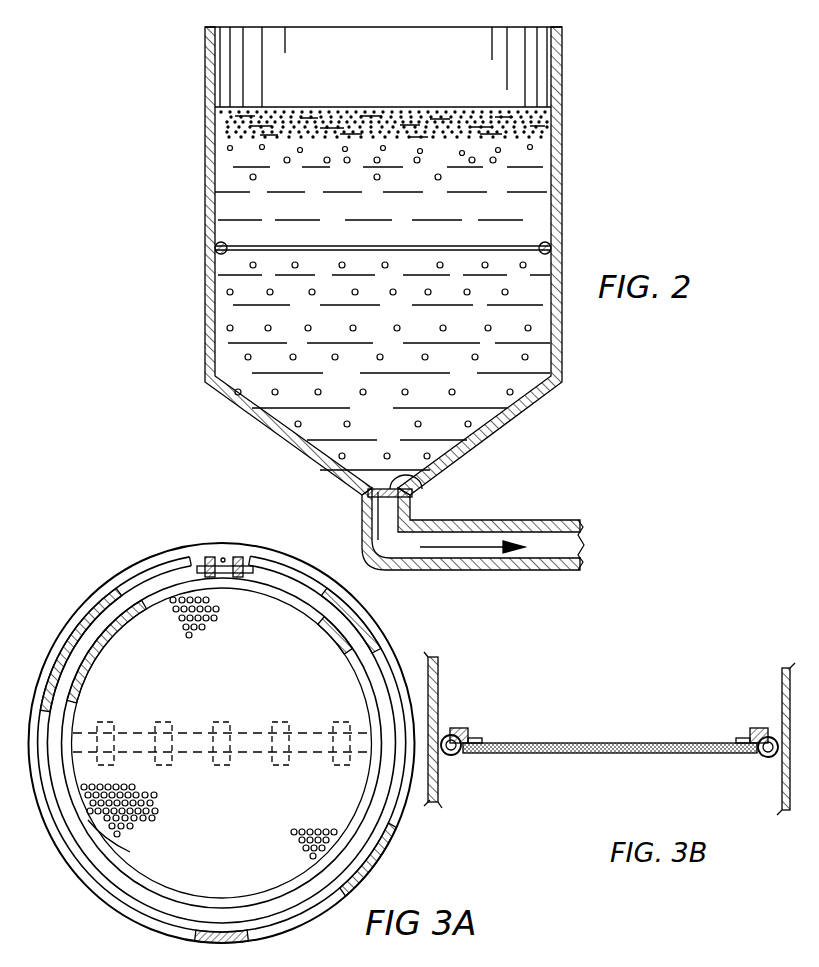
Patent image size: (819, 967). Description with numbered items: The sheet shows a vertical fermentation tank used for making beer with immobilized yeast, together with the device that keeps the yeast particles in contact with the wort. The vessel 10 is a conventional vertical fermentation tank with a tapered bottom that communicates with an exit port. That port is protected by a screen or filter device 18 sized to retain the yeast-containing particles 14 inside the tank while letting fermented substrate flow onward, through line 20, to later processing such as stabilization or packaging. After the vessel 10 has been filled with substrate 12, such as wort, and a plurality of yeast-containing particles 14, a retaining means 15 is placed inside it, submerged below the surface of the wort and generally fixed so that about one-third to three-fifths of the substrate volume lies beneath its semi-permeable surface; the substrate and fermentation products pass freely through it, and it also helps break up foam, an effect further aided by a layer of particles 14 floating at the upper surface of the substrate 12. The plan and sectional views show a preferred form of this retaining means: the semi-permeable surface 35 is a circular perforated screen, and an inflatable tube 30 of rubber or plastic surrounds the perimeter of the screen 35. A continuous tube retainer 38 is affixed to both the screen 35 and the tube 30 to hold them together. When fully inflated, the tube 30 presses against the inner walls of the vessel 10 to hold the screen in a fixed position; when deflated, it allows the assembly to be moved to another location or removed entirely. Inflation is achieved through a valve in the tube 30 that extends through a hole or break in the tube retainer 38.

In FIG. 3A, the fermentation vessel 10 is at (150, 558).
In FIG. 3B, the fermentation vessel 10 is at (440, 668).
In FIG. 2, the substrate 12 is at (236, 156).
In FIG. 2, the yeast-containing particles 14 is at (543, 130).
In FIG. 2, the retaining means 15 is at (512, 250).
In FIG. 2, the filter device 18 is at (414, 476).
In FIG. 2, the line 20 is at (507, 520).
In FIG. 3A, the inflatable tube 30 is at (252, 562).
In FIG. 3B, the inflatable tube 30 is at (460, 758).
In FIG. 3A, the semi-permeable surface 35 is at (163, 645).
In FIG. 3B, the semi-permeable surface 35 is at (650, 752).
In FIG. 3A, the tube retainer 38 is at (74, 647).
In FIG. 3B, the tube retainer 38 is at (462, 728).